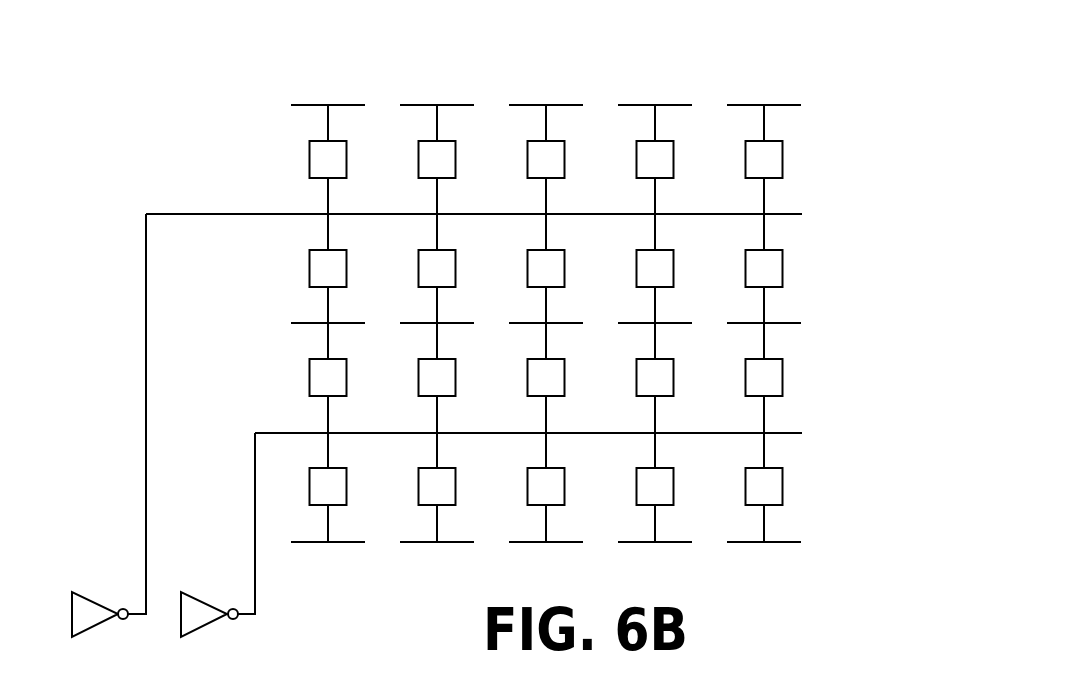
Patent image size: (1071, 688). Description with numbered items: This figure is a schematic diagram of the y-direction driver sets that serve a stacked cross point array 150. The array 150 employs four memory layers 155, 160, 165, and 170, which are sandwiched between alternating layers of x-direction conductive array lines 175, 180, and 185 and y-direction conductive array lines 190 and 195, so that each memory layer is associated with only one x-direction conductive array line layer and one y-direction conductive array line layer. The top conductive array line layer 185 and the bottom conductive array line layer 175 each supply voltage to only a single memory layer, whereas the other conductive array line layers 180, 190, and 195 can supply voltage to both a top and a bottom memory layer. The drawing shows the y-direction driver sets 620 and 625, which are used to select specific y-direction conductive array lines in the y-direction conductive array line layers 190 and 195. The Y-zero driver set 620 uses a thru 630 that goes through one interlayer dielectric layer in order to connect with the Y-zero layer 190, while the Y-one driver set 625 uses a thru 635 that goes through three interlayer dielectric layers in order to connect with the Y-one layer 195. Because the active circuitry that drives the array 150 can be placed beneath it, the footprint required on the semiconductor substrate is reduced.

The stacked cross point array 150 is at (735, 80).
The memory layer 155 is at (817, 490).
The memory layer 160 is at (817, 382).
The memory layer 165 is at (817, 270).
The memory layer 170 is at (817, 162).
The X0 x-direction conductive array line layer 175 is at (287, 542).
The X1 x-direction conductive array line layer 180 is at (280, 323).
The X2 x-direction conductive array line layer 185 is at (280, 103).
The Y0 y-direction conductive array line layer 190 is at (292, 433).
The Y1 y-direction conductive array line layer 195 is at (235, 214).
The Y0 driver set 620 is at (193, 600).
The Y1 driver set 625 is at (102, 597).
The thru 630 is at (253, 573).
The thru 635 is at (146, 247).